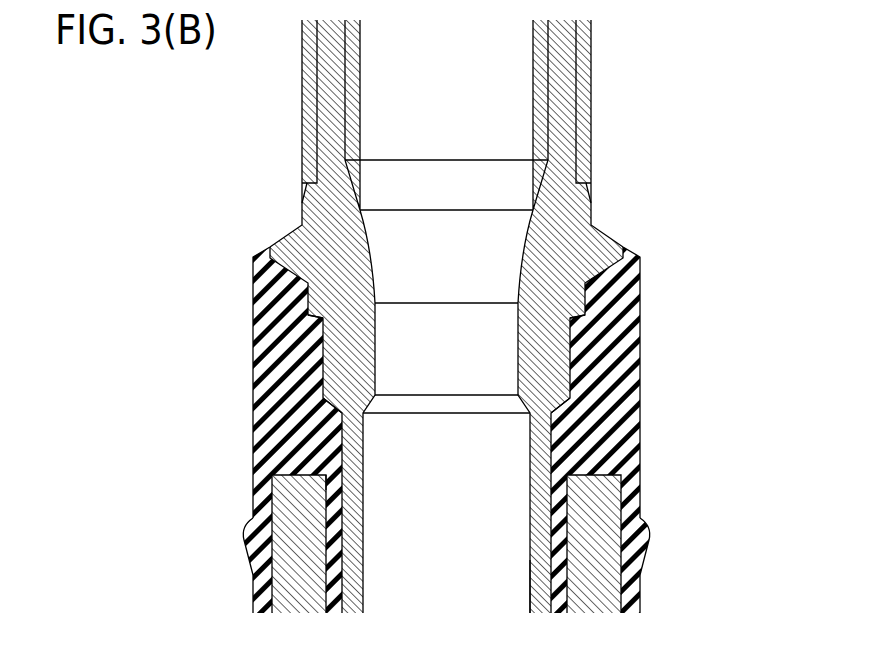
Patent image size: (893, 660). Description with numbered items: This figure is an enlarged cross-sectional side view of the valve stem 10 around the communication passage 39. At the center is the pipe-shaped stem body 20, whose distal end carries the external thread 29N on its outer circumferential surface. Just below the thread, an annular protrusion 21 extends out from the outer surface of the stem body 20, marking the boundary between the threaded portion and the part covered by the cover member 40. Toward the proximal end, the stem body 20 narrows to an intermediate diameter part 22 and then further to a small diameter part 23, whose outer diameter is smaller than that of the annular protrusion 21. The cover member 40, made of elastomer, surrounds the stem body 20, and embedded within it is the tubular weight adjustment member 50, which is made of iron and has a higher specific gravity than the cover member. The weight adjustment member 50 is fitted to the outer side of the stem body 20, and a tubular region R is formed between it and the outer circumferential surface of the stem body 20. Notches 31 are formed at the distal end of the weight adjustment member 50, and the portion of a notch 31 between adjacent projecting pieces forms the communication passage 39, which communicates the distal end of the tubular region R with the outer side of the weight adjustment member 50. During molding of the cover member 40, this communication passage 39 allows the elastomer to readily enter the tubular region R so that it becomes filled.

The valve stem 10 is at (694, 241).
The stem body 20 is at (592, 433).
The annular protrusion 21 is at (283, 233).
The intermediate diameter part 22 is at (318, 347).
The small diameter part 23 is at (538, 577).
The external thread 29N is at (592, 102).
The notch 31 is at (285, 445).
The communication passage 39 is at (583, 411).
The cover member 40 is at (633, 509).
The weight adjustment member 50 is at (292, 576).
The tubular region R is at (330, 492).